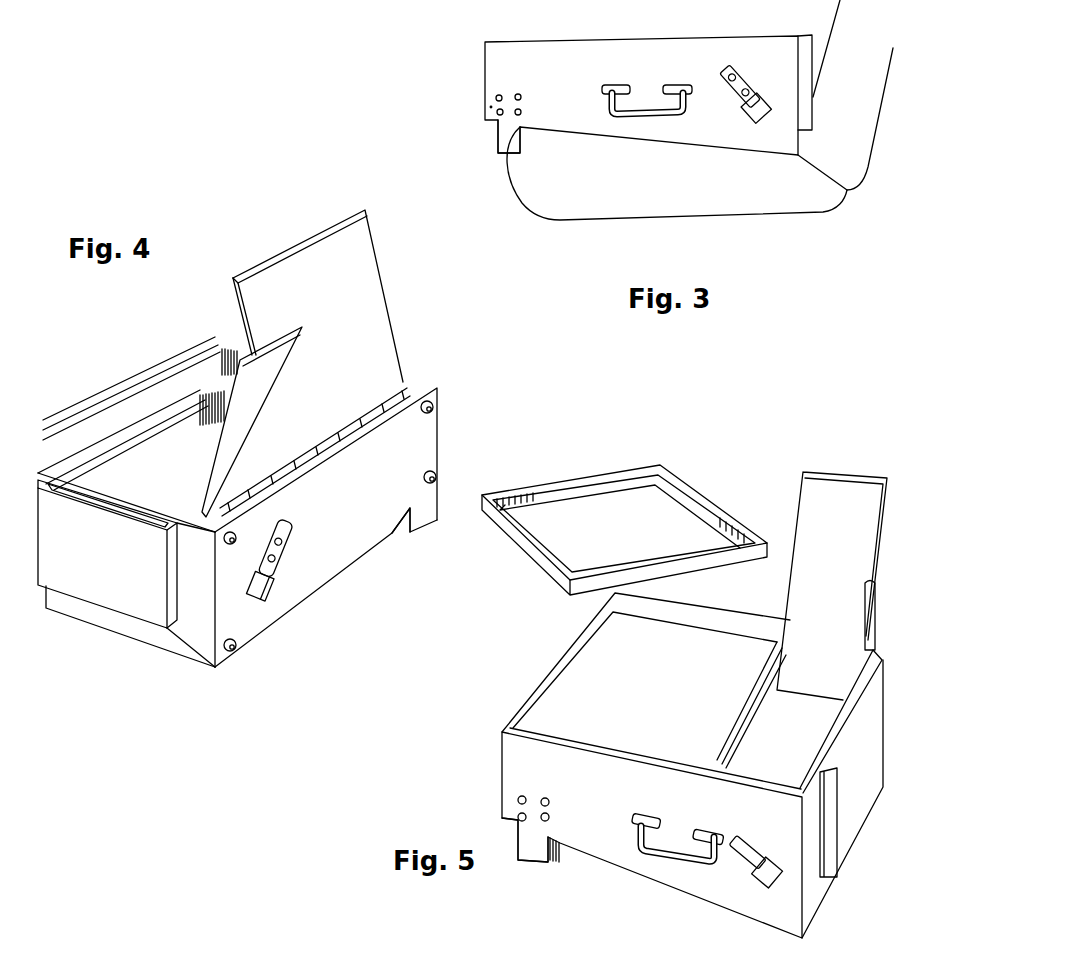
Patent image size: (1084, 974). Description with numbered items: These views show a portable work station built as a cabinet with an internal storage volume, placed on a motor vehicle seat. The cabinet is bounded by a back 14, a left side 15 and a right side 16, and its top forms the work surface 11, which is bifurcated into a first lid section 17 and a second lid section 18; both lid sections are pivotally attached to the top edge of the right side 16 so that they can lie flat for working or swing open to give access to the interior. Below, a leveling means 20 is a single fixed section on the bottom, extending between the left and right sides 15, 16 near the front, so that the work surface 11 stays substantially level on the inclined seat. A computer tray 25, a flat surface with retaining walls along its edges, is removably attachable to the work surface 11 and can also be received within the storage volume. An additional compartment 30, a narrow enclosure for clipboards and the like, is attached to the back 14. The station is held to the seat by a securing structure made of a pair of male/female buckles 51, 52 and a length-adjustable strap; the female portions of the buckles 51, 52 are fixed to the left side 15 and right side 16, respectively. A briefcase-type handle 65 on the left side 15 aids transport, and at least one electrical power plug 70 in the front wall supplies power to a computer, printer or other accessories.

In FIG. 4, the work surface 11 is at (240, 233).
In FIG. 4, the back 14 is at (198, 627).
In FIG. 3, the left side 15 is at (523, 72).
In FIG. 4, the right side 16 is at (327, 532).
In FIG. 4, the first lid section 17 is at (253, 298).
In FIG. 5, the first lid section 17 is at (561, 708).
In FIG. 4, the second lid section 18 is at (240, 415).
In FIG. 5, the second lid section 18 is at (810, 505).
In FIG. 3, the leveling means 20 is at (505, 138).
In FIG. 4, the leveling means 20 is at (417, 523).
In FIG. 5, the leveling means 20 is at (523, 845).
In FIG. 5, the computer tray 25 is at (525, 545).
In FIG. 3, the additional compartment 30 is at (800, 53).
In FIG. 4, the additional compartment 30 is at (118, 595).
In FIG. 3, the male/female buckle 51 is at (746, 121).
In FIG. 4, the male/female buckle 52 is at (272, 590).
In FIG. 3, the handle 65 is at (623, 115).
In FIG. 5, the handle 65 is at (650, 847).
In FIG. 3, the electrical power plug 70 is at (541, 100).
In FIG. 5, the electrical power plug 70 is at (525, 773).